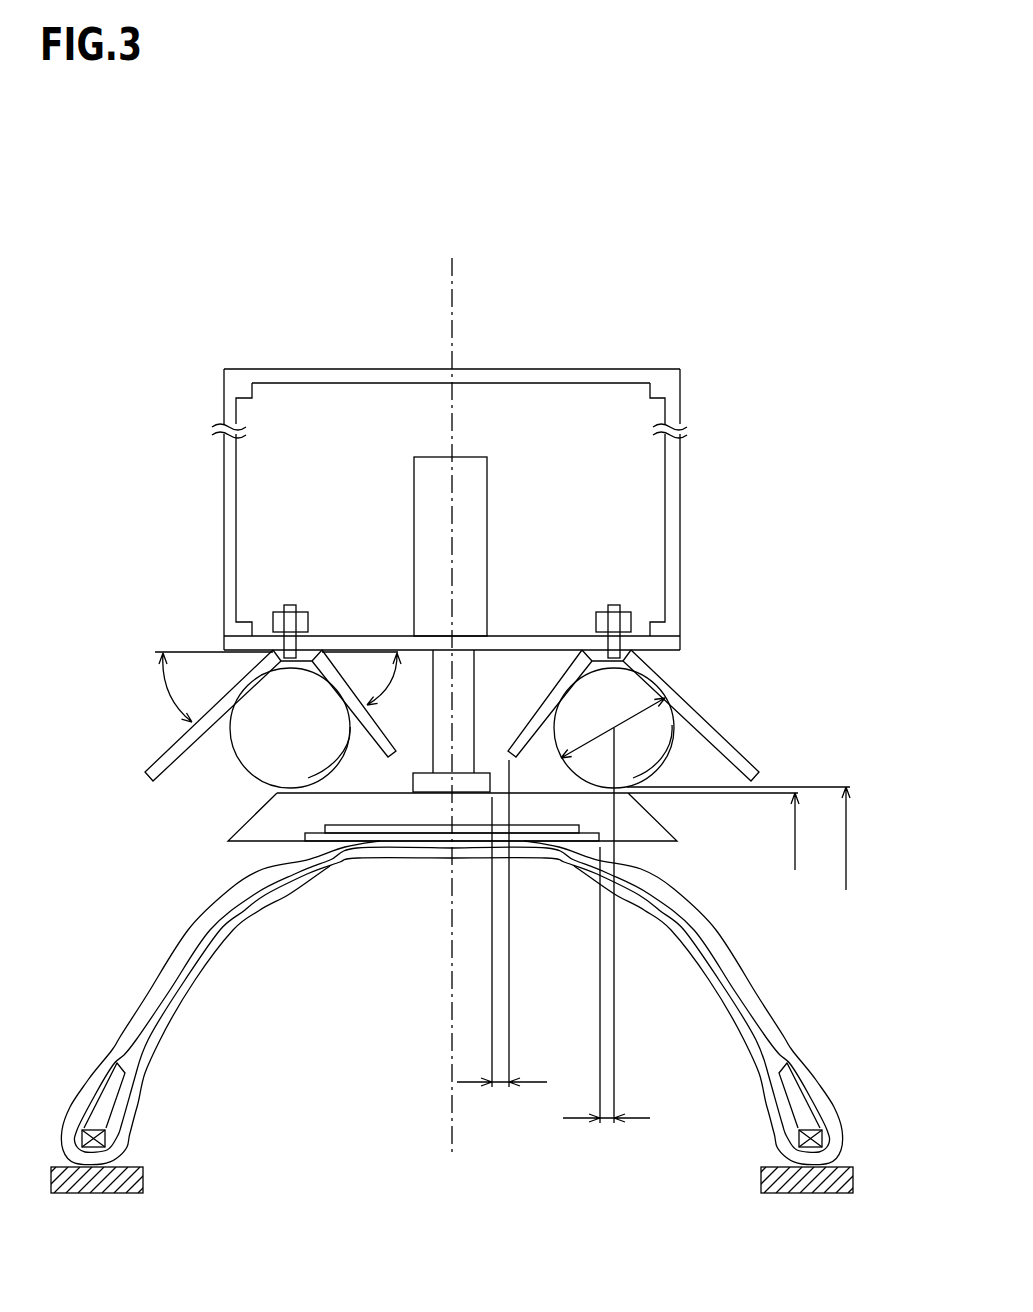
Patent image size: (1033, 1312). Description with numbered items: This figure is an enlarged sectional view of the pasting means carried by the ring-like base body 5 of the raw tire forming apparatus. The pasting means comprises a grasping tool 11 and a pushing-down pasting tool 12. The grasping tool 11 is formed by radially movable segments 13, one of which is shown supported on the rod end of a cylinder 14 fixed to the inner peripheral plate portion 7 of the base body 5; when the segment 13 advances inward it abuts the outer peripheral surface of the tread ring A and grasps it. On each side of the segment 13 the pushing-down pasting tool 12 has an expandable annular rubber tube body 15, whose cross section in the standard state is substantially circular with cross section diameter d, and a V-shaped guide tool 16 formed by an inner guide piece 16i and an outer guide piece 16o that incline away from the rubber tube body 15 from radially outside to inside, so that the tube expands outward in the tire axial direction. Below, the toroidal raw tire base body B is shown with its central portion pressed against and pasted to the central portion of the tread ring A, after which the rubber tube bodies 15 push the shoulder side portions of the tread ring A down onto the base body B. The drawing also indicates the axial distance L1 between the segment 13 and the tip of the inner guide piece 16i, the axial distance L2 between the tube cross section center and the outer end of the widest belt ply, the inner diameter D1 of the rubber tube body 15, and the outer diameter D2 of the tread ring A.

The ring-like base body 5 is at (626, 346).
The inner peripheral plate portion 7 is at (545, 643).
The cylinder 14 is at (489, 472).
The segment 13 is at (430, 783).
The grasping tool 11 is at (404, 843).
The pushing-down pasting tool 12 is at (425, 701).
The guide tool 16 is at (414, 671).
The outer guide piece 16o is at (246, 688).
The inner guide piece 16i is at (353, 690).
The rubber tube body 15 is at (283, 755).
The cross section diameter d is at (650, 692).
The tread ring A is at (657, 841).
The raw tire base body B is at (760, 1002).
The inner diameter D1 is at (748, 856).
The outer diameter D2 is at (795, 846).
The distance L1 is at (502, 941).
The distance L2 is at (606, 943).